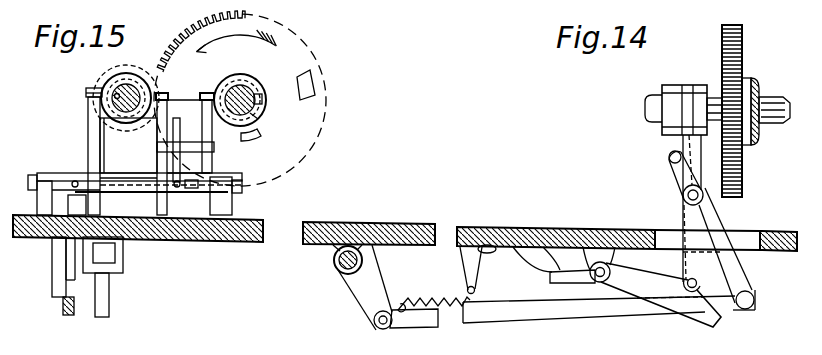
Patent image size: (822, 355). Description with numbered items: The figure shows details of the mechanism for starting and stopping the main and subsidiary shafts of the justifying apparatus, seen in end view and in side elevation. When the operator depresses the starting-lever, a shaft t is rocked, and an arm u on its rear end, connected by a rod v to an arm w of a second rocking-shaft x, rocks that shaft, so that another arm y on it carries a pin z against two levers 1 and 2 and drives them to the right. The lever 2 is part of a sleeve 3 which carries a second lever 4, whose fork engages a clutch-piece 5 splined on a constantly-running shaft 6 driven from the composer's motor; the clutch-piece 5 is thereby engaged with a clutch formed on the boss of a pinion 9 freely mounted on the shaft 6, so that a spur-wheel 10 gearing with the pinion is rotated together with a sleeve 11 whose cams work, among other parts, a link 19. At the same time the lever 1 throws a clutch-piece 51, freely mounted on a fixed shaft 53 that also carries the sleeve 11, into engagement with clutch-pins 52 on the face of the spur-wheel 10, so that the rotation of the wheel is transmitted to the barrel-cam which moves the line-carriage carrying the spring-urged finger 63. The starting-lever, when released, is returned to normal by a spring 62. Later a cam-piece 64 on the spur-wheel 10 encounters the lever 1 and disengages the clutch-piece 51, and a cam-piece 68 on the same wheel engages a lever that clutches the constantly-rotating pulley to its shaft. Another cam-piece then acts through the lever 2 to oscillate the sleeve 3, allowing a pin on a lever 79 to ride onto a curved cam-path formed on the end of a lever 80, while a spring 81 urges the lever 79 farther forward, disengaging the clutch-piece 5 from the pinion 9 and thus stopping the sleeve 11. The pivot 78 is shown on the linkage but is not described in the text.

In FIG. 15, the lever 1 is at (207, 133).
In FIG. 15, the lever 2 is at (165, 144).
In FIG. 15, the sleeve 3 is at (151, 155).
In FIG. 15, the second lever 4 is at (88, 118).
In FIG. 15, the clutch-piece 5 is at (118, 82).
In FIG. 15, the constantly-running shaft 6 is at (160, 90).
In FIG. 15, the pinion 9 is at (90, 88).
In FIG. 15, the spur-wheel 10 is at (306, 60).
In FIG. 14, the spur-wheel 10 is at (742, 52).
In FIG. 15, the sleeve 11 is at (167, 128).
In FIG. 15, the link 19 is at (138, 221).
In FIG. 15, the clutch-piece 51 is at (253, 108).
In FIG. 15, the clutch-pins 52 is at (263, 103).
In FIG. 15, the fixed shaft 53 is at (257, 112).
In FIG. 14, the spring 62 is at (441, 299).
In FIG. 14, the spring-urged finger 63 is at (784, 98).
In FIG. 15, the cam-piece 64 is at (250, 146).
In FIG. 15, the cam-piece 68 is at (308, 90).
In FIG. 14, the pivot 78 is at (688, 282).
In FIG. 14, the lever 79 is at (735, 287).
In FIG. 14, the lever 80 is at (687, 313).
In FIG. 14, the spring 81 is at (527, 254).
In FIG. 15, the second rocking-shaft x is at (30, 176).
In FIG. 14, the second rocking-shaft x is at (683, 200).
In FIG. 15, the arm y is at (185, 152).
In FIG. 14, the arm y is at (670, 172).
In FIG. 15, the pin z is at (204, 184).
In FIG. 14, the pin z is at (668, 152).
In FIG. 15, the arm w is at (52, 272).
In FIG. 14, the arm w is at (754, 300).
In FIG. 15, the rod v is at (97, 287).
In FIG. 14, the rod v is at (599, 309).
In FIG. 14, the shaft t is at (334, 262).
In FIG. 14, the arm u is at (385, 287).